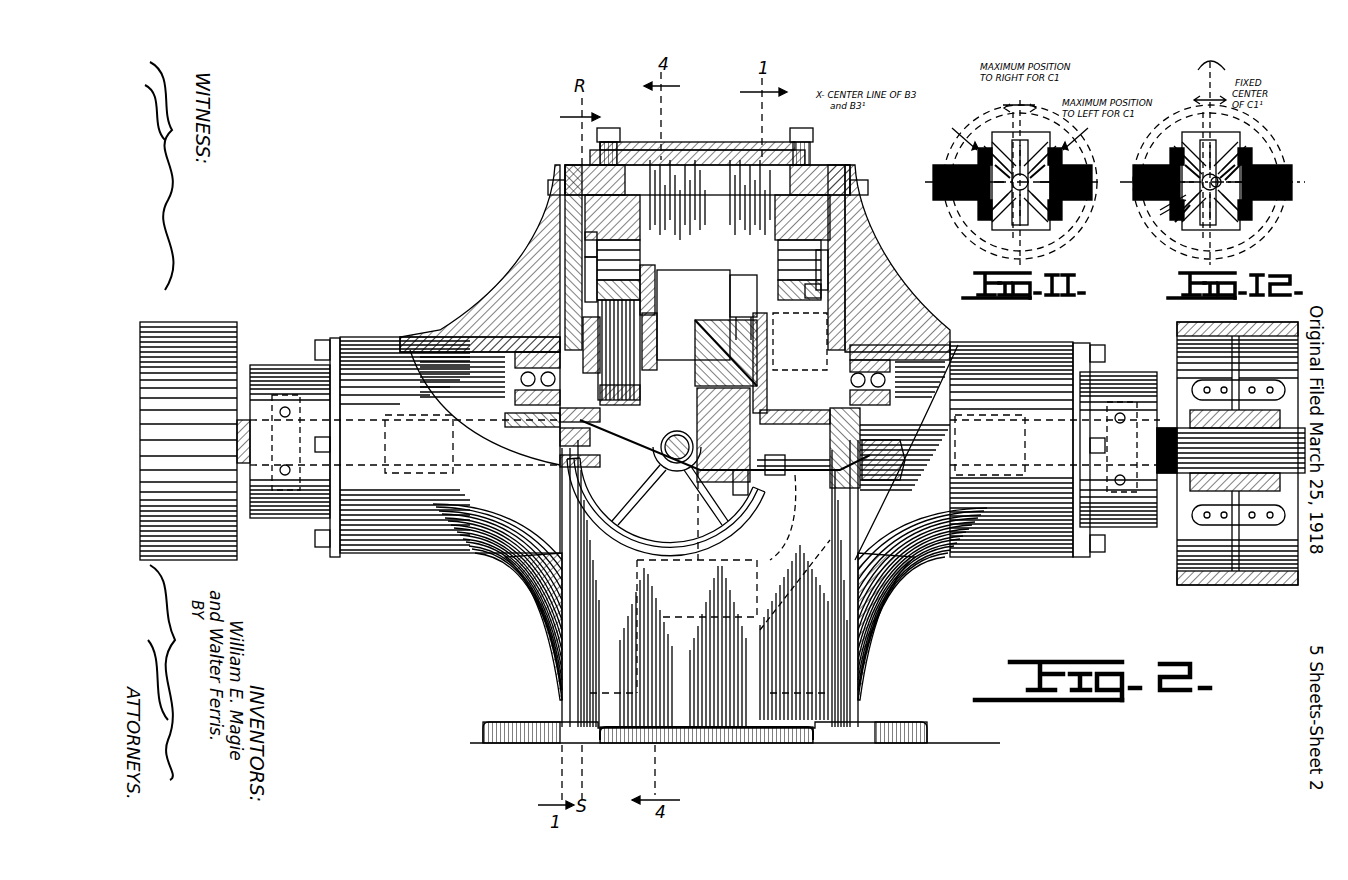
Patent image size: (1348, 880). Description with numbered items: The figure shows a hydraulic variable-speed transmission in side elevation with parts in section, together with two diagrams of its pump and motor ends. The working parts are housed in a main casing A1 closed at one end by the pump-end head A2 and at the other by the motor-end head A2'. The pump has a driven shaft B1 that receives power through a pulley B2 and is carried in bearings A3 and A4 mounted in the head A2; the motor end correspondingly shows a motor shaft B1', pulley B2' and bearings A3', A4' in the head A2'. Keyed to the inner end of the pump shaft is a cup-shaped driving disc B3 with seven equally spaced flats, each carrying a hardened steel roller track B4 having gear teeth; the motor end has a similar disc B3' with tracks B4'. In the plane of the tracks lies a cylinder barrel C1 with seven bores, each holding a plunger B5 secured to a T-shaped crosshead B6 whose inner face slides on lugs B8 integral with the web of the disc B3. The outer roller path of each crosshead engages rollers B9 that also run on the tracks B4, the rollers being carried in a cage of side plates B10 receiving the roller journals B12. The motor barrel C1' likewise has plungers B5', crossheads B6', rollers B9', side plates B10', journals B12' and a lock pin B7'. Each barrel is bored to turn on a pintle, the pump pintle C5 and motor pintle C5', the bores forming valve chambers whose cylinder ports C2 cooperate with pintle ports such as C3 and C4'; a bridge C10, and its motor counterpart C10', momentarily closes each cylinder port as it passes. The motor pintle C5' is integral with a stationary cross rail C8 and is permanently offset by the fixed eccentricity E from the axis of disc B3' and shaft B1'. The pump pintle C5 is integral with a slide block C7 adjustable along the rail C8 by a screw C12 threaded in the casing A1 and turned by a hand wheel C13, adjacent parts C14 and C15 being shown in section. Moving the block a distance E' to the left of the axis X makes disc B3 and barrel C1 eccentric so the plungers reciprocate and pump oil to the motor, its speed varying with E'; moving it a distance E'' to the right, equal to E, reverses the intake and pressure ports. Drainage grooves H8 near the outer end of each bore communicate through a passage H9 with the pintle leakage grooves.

In FIG. 2, the main casing A1 is at (672, 143).
In FIG. 2, the pump-end head A2 is at (480, 258).
In FIG. 2, the motor-end head A2' is at (901, 362).
In FIG. 2, the bearing A3 is at (290, 418).
In FIG. 2, the shaft hub A3' is at (1119, 431).
In FIG. 2, the bearing A4 is at (480, 328).
In FIG. 2, the bearing support A4' is at (900, 356).
In FIG. 2, the driven shaft B1 is at (254, 486).
In FIG. 2, the motor shaft B1' is at (1224, 488).
In FIG. 2, the pulley B2 is at (199, 421).
In FIG. 2, the pulley B2' is at (1237, 475).
In FIG. 2, the driving disc B3 is at (677, 171).
In FIG. 11, the driving disc B3 is at (1046, 182).
In FIG. 12, the driving disc B3 is at (1212, 182).
In FIG. 2, the motor driving disc B3' is at (758, 169).
In FIG. 2, the roller track B4 is at (628, 203).
In FIG. 2, the bearing block B4' is at (781, 200).
In FIG. 2, the plunger B5 is at (566, 339).
In FIG. 2, the motor plunger B5' is at (799, 341).
In FIG. 2, the crosshead B6 is at (552, 246).
In FIG. 2, the bearing race B6' is at (761, 271).
In FIG. 2, the bearing retainer B7' is at (862, 279).
In FIG. 2, the lugs B8 is at (586, 282).
In FIG. 2, the rollers B9 is at (639, 230).
In FIG. 2, the ball bearing B9' is at (765, 237).
In FIG. 2, the side plates B10 is at (642, 249).
In FIG. 2, the bearing cap B10' is at (862, 245).
In FIG. 2, the journals B12 is at (539, 257).
In FIG. 2, the casing flange B12' is at (870, 251).
In FIG. 2, the cylinder barrel C1 is at (707, 431).
In FIG. 11, the cylinder barrel C1 is at (995, 194).
In FIG. 12, the cylinder barrel C1 is at (1187, 199).
In FIG. 2, the motor cylinder barrel C1' is at (778, 363).
In FIG. 12, the motor cylinder barrel C1' is at (1188, 228).
In FIG. 2, the port C2 is at (540, 432).
In FIG. 2, the pintle port C3 is at (695, 340).
In FIG. 2, the motor pintle port C4' is at (752, 510).
In FIG. 2, the pump pintle C5 is at (552, 451).
In FIG. 12, the pump pintle C5 is at (1153, 225).
In FIG. 2, the motor pintle C5' is at (794, 503).
In FIG. 12, the motor pintle C5' is at (1268, 206).
In FIG. 2, the slide block C7 is at (722, 302).
In FIG. 11, the slide block C7 is at (1040, 228).
In FIG. 12, the slide block C7 is at (1255, 232).
In FIG. 2, the cross rail C8 is at (670, 486).
In FIG. 12, the cross rail C8 is at (1162, 200).
In FIG. 2, the bridge C10 is at (677, 432).
In FIG. 2, the shaft C10' is at (909, 459).
In FIG. 2, the screw C12 is at (666, 507).
In FIG. 2, the hand wheel C13 is at (632, 548).
In FIG. 2, the block C14 is at (732, 290).
In FIG. 2, the lever C15 is at (790, 520).
In FIG. 2, the drainage grooves H8 is at (647, 272).
In FIG. 2, the passage H9 is at (515, 390).
In FIG. 12, the fixed eccentricity E is at (1217, 57).
In FIG. 12, the pump eccentricity E' is at (1227, 79).
In FIG. 11, the reversed pump eccentricity E'' is at (1037, 91).
In FIG. 12, the axis X is at (1206, 74).